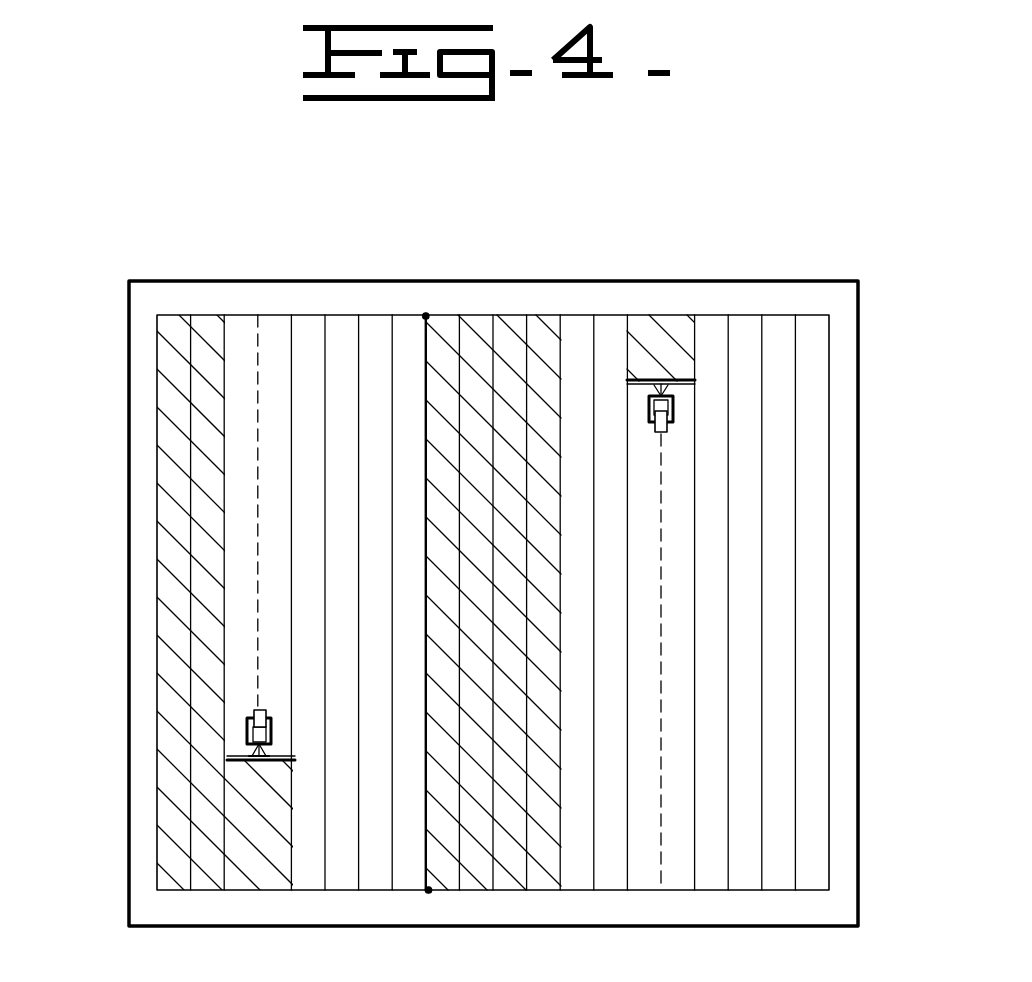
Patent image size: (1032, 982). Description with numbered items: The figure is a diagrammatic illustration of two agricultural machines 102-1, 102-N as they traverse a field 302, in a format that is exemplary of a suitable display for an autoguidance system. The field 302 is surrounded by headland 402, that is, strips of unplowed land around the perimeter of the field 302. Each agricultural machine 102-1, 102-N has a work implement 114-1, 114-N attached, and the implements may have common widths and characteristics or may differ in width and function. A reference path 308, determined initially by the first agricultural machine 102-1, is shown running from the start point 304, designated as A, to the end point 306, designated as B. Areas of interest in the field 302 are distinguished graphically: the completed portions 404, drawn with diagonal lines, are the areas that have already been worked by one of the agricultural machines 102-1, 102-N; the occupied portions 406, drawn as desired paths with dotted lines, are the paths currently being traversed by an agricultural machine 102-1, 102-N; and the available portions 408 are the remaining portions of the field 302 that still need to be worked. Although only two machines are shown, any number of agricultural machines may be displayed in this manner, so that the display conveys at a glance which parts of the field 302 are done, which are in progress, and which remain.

The field 302 is at (258, 239).
The headland 402 is at (764, 295).
The completed portions 404 is at (648, 325).
The occupied portions 406 is at (257, 329).
The available portions 408 is at (747, 862).
The reference path 308 is at (424, 342).
The end point 306 is at (431, 315).
The start point 304 is at (428, 891).
The first agricultural machine 102-1 is at (245, 713).
The agricultural machine 102-N is at (675, 430).
The work implement 114-1 is at (234, 756).
The work implement 114-N is at (696, 384).